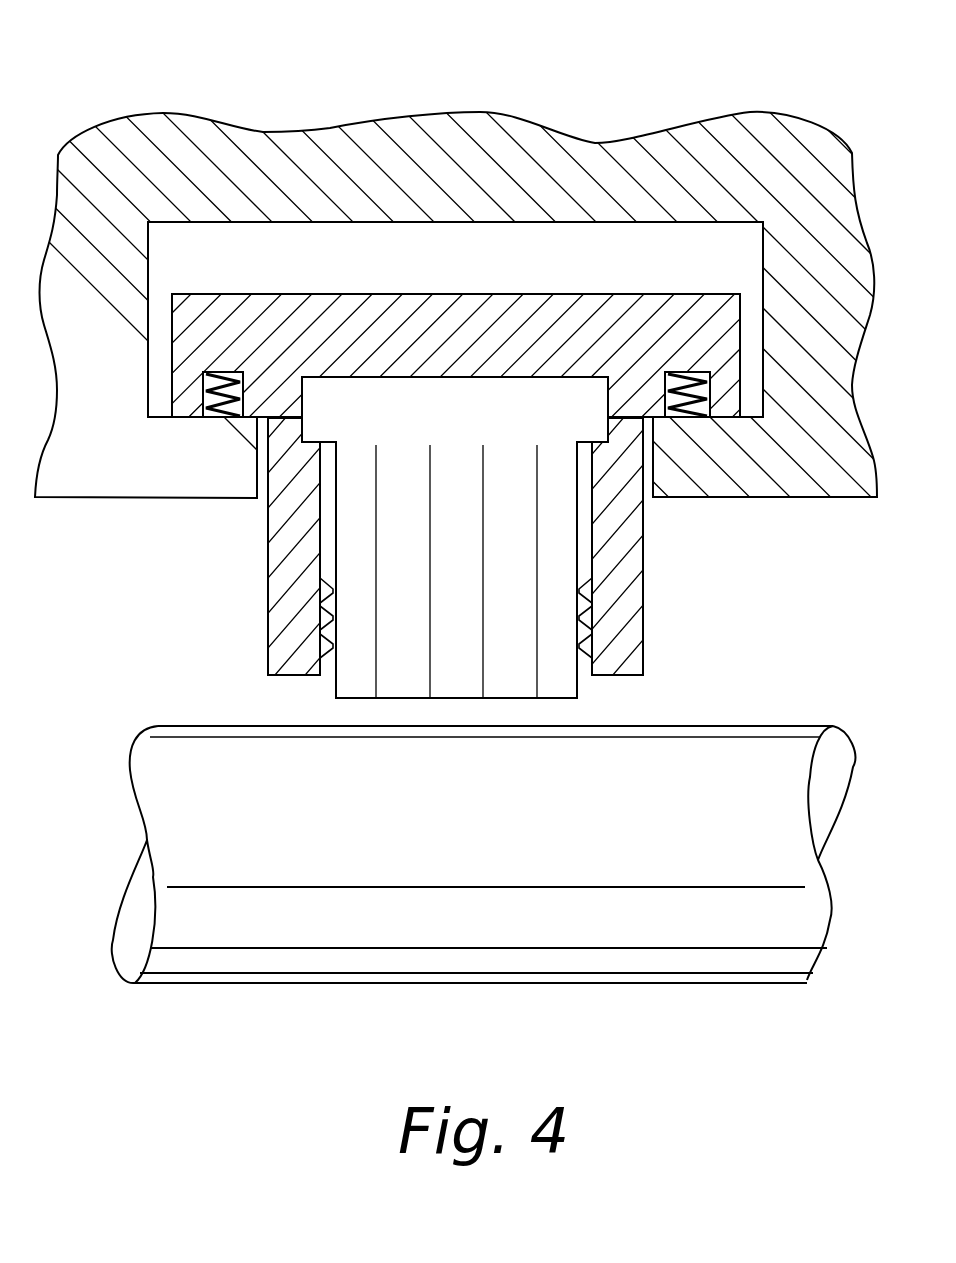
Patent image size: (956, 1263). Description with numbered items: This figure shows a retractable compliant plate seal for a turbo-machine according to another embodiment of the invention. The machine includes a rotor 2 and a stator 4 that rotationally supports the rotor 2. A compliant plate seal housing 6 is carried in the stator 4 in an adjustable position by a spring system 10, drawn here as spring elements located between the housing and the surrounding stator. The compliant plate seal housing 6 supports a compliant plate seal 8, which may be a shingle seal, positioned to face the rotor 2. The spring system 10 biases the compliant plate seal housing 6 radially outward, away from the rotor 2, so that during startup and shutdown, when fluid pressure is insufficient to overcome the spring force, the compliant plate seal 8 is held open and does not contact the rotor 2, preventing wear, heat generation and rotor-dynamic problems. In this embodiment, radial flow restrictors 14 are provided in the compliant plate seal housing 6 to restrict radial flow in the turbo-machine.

The rotor 2 is at (485, 833).
The stator 4 is at (233, 175).
The compliant plate seal housing 6 is at (655, 337).
The compliant plate seal 8 is at (545, 675).
The spring system 10 is at (212, 417).
The radial flow restrictors 14 is at (328, 648).